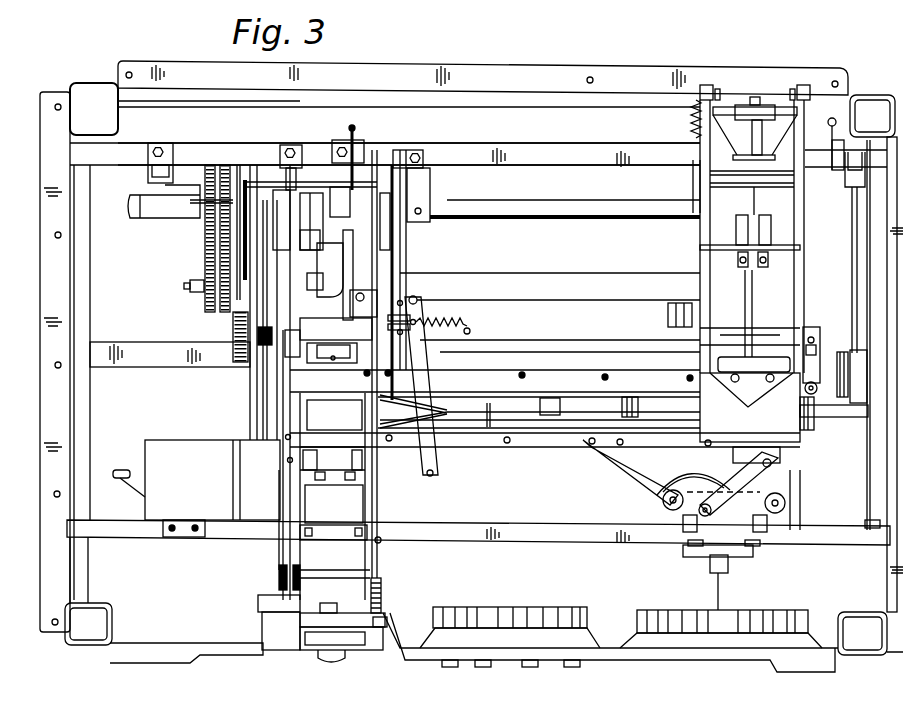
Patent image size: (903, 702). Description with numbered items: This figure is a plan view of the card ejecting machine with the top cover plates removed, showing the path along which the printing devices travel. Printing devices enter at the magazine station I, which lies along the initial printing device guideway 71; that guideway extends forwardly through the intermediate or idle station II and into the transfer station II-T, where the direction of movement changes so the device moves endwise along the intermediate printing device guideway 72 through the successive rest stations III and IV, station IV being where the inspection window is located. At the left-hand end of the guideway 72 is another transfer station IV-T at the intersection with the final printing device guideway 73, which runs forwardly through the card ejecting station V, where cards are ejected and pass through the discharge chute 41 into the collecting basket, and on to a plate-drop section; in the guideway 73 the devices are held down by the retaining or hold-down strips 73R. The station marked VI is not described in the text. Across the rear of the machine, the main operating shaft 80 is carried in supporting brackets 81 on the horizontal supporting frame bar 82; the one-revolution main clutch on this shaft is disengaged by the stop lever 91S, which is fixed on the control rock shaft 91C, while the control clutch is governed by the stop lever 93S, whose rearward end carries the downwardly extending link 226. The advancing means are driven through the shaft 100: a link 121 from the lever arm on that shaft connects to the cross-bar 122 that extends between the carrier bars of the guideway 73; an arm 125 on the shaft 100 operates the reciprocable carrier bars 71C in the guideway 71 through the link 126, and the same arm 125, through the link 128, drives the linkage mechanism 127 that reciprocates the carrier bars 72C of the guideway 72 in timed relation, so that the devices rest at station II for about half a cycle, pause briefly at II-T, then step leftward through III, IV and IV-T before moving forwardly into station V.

The discharge chute 41 is at (158, 446).
The initial printing device guideway 71 is at (814, 314).
The carrier bars 71C is at (795, 264).
The intermediate printing device guideway 72 is at (565, 384).
The carrier bars 72C is at (483, 388).
The final printing device guideway 73 is at (380, 505).
The retaining or hold-down strips 73R is at (380, 521).
The main operating shaft 80 is at (441, 220).
The supporting brackets 81 is at (155, 183).
The horizontal supporting frame bar 82 is at (556, 157).
The stop lever 91S is at (250, 180).
The control rock shaft 91C is at (307, 180).
The stop lever 93S is at (378, 270).
The shaft 100 is at (320, 272).
The link 121 is at (338, 302).
The cross-bar 122 is at (311, 355).
The arm 125 is at (730, 238).
The link 126 is at (756, 196).
The linkage mechanism 127 is at (636, 499).
The link 128 is at (748, 318).
The link 226 is at (362, 147).
The magazine station I is at (721, 155).
The intermediate or idle station II is at (769, 322).
The transfer station II-T is at (750, 399).
The station III is at (585, 408).
The station IV is at (456, 407).
The transfer station IV-T is at (334, 415).
The card ejecting station V is at (334, 504).
The station VI is at (368, 609).